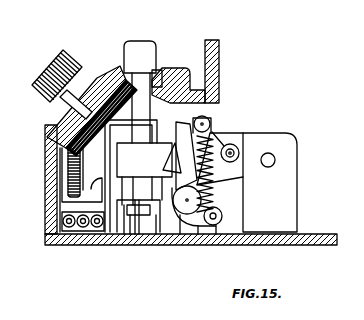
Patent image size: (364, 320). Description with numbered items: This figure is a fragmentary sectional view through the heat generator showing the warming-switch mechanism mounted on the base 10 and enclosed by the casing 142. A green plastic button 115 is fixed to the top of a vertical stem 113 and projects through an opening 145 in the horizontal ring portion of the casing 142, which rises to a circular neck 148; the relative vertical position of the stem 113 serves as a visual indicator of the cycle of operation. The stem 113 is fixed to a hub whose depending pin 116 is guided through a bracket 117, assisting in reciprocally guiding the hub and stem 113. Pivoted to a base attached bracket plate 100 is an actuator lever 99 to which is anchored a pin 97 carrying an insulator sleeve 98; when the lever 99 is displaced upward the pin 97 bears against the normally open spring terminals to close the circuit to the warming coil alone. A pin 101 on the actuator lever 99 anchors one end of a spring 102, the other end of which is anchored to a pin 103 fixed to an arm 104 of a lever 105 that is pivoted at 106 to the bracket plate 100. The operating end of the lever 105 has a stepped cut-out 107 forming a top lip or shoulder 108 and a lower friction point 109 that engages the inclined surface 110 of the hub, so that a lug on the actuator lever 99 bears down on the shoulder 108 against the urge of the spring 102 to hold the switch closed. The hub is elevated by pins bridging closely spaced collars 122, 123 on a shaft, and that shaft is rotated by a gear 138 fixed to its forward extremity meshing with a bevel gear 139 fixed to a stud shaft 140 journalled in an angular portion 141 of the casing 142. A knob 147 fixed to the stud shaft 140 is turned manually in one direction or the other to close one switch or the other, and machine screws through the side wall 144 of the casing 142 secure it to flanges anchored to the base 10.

The base 10 is at (318, 246).
The pin 97 is at (237, 151).
The insulator sleeve 98 is at (238, 146).
The actuator lever 99 is at (226, 138).
The bracket plate 100 is at (298, 190).
The pin 101 is at (212, 118).
The spring 102 is at (220, 192).
The pin 103 is at (224, 214).
The arm 104 is at (216, 242).
The lever 105 is at (205, 238).
The pivot 106 is at (188, 238).
The stepped cut-out 107 is at (172, 168).
The top lip or shoulder 108 is at (190, 148).
The friction point 109 is at (215, 198).
The inclined surface 110 is at (168, 162).
The stem 113 is at (157, 68).
The button 115 is at (151, 45).
The pin 116 is at (146, 238).
The bracket 117 is at (134, 238).
The collar 122 is at (125, 242).
The collar 123 is at (158, 238).
The gear 138 is at (70, 173).
The bevel gear 139 is at (70, 117).
The stud shaft 140 is at (72, 108).
The angular portion 141 is at (97, 78).
The casing 142 is at (48, 184).
The side wall 144 is at (52, 232).
The opening 145 is at (168, 68).
The knob 147 is at (46, 72).
The circular neck 148 is at (222, 58).